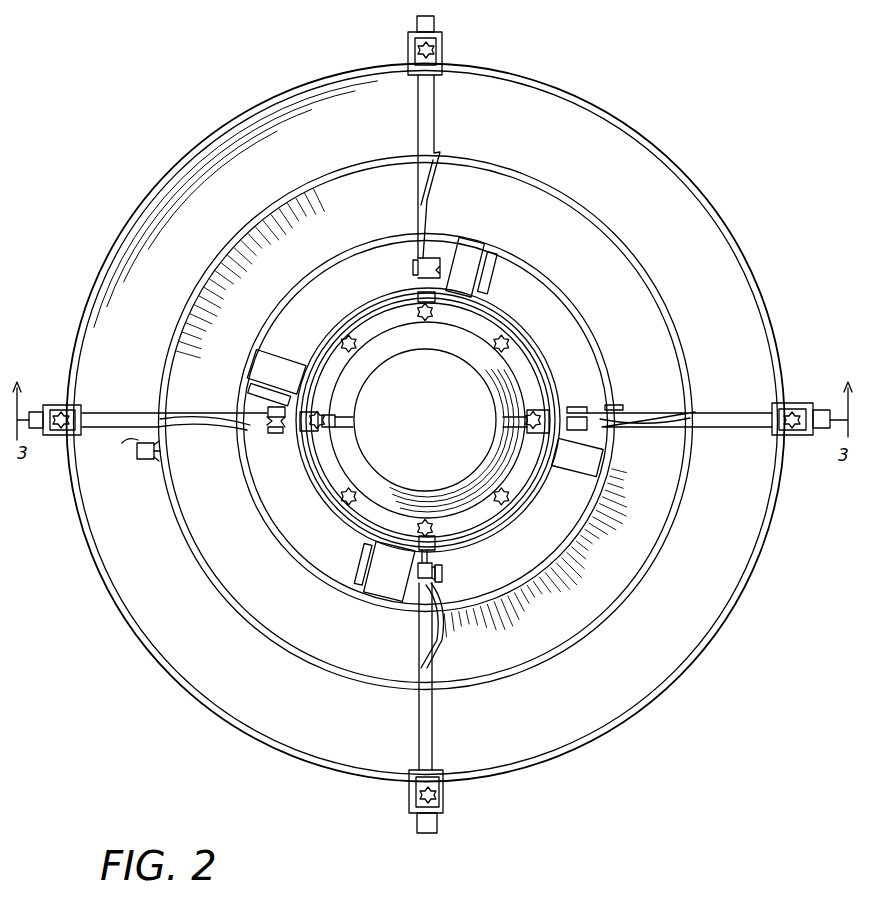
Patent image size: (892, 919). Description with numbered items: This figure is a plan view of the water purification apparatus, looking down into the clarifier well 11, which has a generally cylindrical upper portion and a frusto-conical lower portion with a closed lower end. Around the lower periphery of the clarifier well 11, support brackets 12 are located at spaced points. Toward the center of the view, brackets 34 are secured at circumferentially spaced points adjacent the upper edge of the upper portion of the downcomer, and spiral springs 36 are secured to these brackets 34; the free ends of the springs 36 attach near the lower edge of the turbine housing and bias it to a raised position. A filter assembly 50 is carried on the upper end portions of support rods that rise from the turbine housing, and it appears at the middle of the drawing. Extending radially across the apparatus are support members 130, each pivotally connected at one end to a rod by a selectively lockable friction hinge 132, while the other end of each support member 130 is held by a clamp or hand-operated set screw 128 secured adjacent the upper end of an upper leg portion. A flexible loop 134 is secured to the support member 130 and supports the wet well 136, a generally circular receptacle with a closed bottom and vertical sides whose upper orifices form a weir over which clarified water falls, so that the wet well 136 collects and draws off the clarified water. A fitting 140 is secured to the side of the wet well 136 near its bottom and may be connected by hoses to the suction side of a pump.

The clarifier well 11 is at (648, 702).
The support bracket 12 is at (441, 786).
The bracket 34 is at (494, 280).
The spiral spring 36 is at (478, 260).
The filter assembly 50 is at (507, 453).
The clamp or hand-operated set screw 128 is at (424, 796).
The support member 130 is at (433, 728).
The selectively lockable friction hinge 132 is at (444, 570).
The flexible loop 134 is at (441, 634).
The wet well 136 is at (598, 612).
The fitting 140 is at (154, 463).